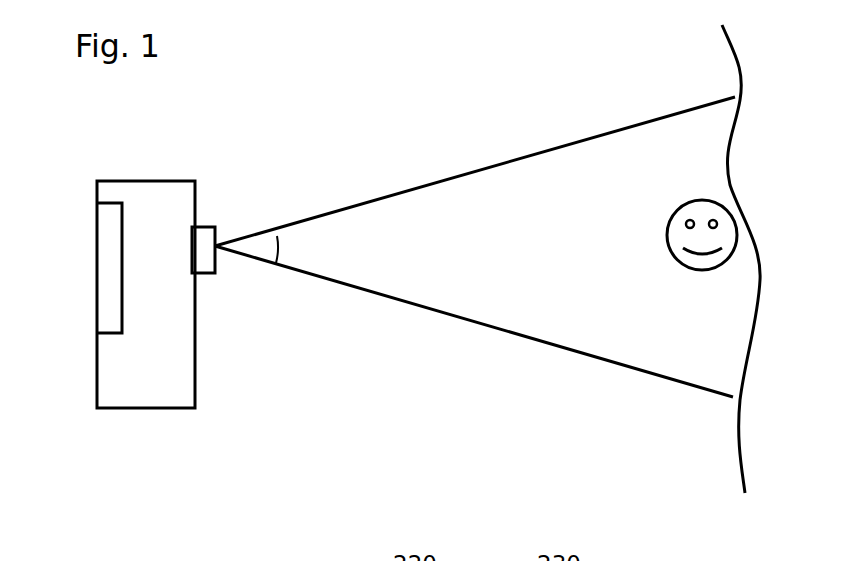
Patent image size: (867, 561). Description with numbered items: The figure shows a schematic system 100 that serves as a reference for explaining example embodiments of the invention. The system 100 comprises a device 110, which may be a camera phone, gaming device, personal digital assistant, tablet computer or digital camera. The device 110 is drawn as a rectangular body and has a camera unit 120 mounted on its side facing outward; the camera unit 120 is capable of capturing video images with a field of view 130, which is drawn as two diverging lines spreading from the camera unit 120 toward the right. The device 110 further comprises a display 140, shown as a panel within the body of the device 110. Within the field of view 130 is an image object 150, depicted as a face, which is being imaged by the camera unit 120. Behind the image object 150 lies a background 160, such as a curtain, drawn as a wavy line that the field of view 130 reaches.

The system 100 is at (183, 148).
The device 110 is at (201, 294).
The camera unit 120 is at (241, 274).
The field of view 130 is at (475, 247).
The display 140 is at (72, 263).
The image object 150 is at (755, 251).
The background 160 is at (772, 259).